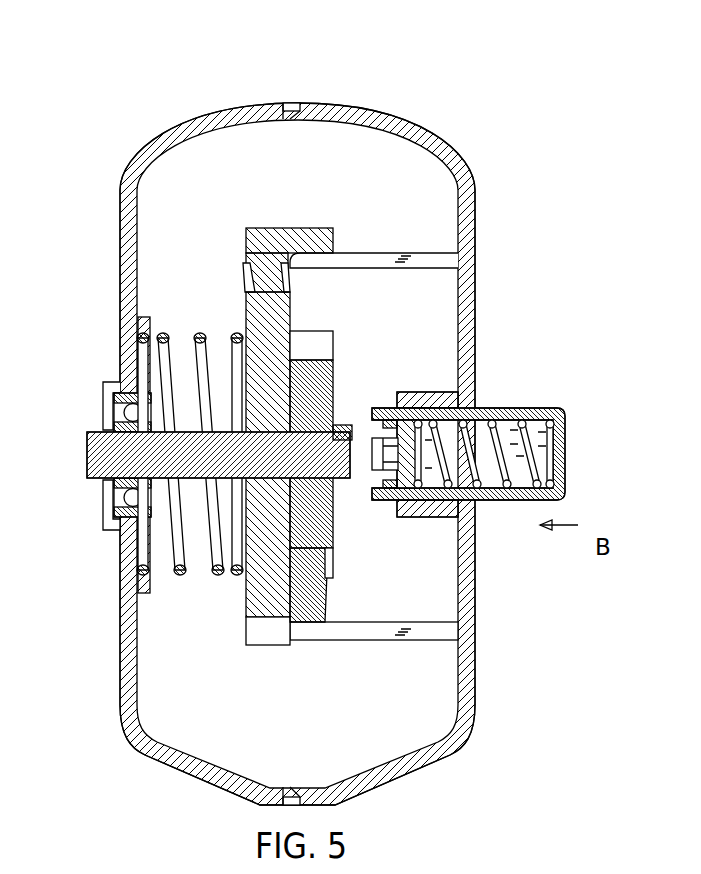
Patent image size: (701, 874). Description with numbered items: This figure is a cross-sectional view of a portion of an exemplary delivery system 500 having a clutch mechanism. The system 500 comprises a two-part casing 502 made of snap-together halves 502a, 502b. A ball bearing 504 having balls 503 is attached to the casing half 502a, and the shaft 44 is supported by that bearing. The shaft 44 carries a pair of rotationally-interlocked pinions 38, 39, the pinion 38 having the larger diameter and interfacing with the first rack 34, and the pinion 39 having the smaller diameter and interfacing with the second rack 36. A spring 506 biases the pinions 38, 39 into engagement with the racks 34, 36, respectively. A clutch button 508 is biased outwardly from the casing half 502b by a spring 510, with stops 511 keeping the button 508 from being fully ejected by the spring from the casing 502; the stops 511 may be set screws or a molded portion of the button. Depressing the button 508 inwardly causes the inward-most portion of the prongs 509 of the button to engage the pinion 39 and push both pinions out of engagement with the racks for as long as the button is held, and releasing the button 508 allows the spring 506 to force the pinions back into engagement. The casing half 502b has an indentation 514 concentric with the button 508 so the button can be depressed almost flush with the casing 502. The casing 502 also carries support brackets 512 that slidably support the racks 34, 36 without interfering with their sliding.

The delivery system 500 is at (98, 133).
The casing 502 is at (412, 38).
The casing half 502a is at (283, 103).
The casing half 502b is at (333, 103).
The balls 503 is at (113, 414).
The ball bearing 504 is at (108, 510).
The spring 506 is at (210, 558).
The clutch button 508 is at (545, 408).
The prongs 509 is at (406, 408).
The spring 510 is at (535, 458).
The stops 511 is at (378, 422).
The support brackets 512 is at (322, 202).
The indentation 514 is at (437, 390).
The first rack 34 is at (262, 272).
The second rack 36 is at (310, 630).
The pinion 38 is at (292, 307).
The pinion 39 is at (335, 538).
The shaft 44 is at (92, 468).